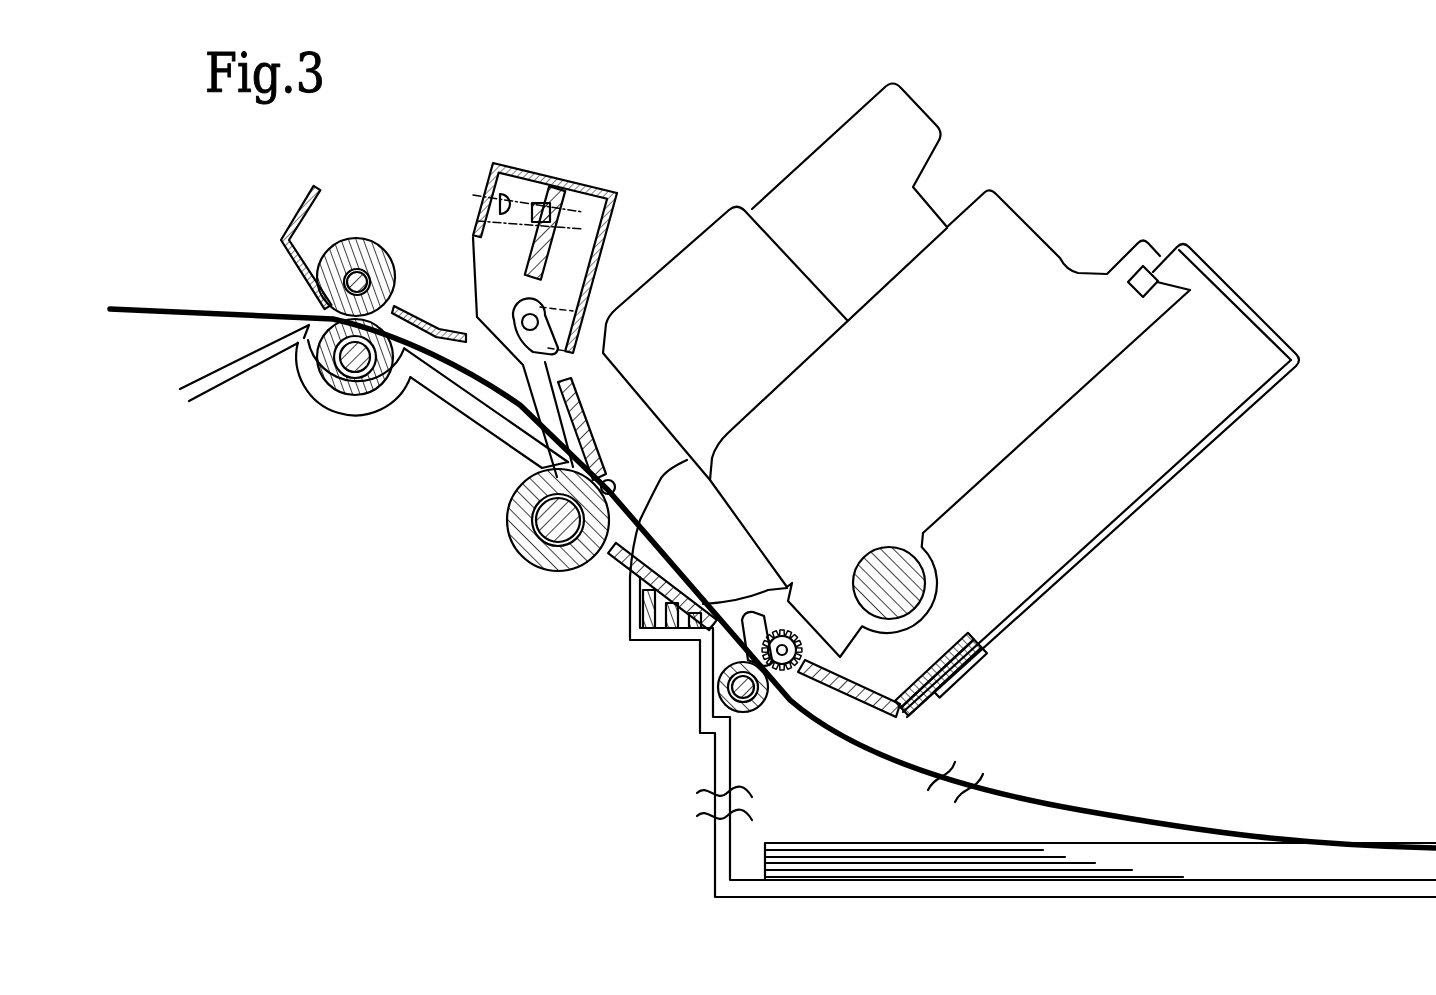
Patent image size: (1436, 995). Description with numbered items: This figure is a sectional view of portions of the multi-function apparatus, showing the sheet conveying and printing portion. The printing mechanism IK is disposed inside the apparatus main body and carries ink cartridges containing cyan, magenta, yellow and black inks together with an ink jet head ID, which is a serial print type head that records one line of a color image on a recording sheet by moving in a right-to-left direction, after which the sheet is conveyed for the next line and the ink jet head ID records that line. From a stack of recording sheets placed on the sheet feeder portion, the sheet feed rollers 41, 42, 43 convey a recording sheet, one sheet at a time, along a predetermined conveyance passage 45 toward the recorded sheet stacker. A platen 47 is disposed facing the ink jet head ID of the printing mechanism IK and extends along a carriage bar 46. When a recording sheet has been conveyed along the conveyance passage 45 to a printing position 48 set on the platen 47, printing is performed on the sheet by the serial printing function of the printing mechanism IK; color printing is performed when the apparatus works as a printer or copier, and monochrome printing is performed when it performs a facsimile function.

The sheet feed roller 41 is at (300, 343).
The sheet feed roller 42 is at (516, 543).
The sheet feed roller 43 is at (719, 697).
The conveyance passage 45 is at (483, 406).
The carriage bar 46 is at (933, 581).
The platen 47 is at (637, 578).
The printing position 48 is at (606, 590).
The ink jet head ID is at (735, 538).
The printing mechanism IK is at (977, 170).